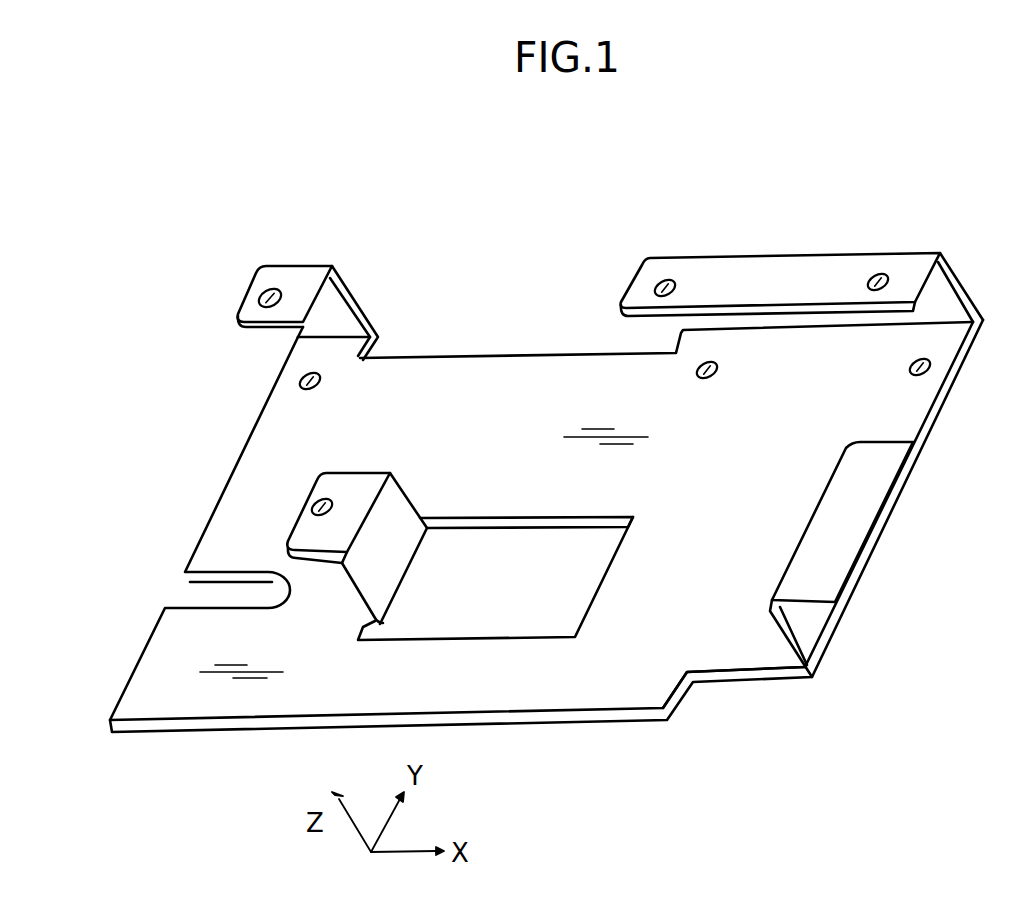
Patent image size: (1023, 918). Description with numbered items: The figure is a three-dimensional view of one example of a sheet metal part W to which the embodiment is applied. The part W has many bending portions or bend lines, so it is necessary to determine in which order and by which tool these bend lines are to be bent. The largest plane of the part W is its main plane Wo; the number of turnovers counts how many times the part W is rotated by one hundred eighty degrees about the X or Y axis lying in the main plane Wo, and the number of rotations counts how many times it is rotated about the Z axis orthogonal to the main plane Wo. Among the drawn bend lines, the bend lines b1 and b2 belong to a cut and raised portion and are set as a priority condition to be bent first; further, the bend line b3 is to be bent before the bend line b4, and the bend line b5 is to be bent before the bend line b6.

The part W is at (505, 243).
The main plane Wo is at (728, 657).
The bend line b1 is at (380, 497).
The bend line b2 is at (415, 563).
The bend line b3 is at (810, 526).
The bend line b4 is at (848, 612).
The bend line b5 is at (878, 258).
The bend line b6 is at (807, 330).